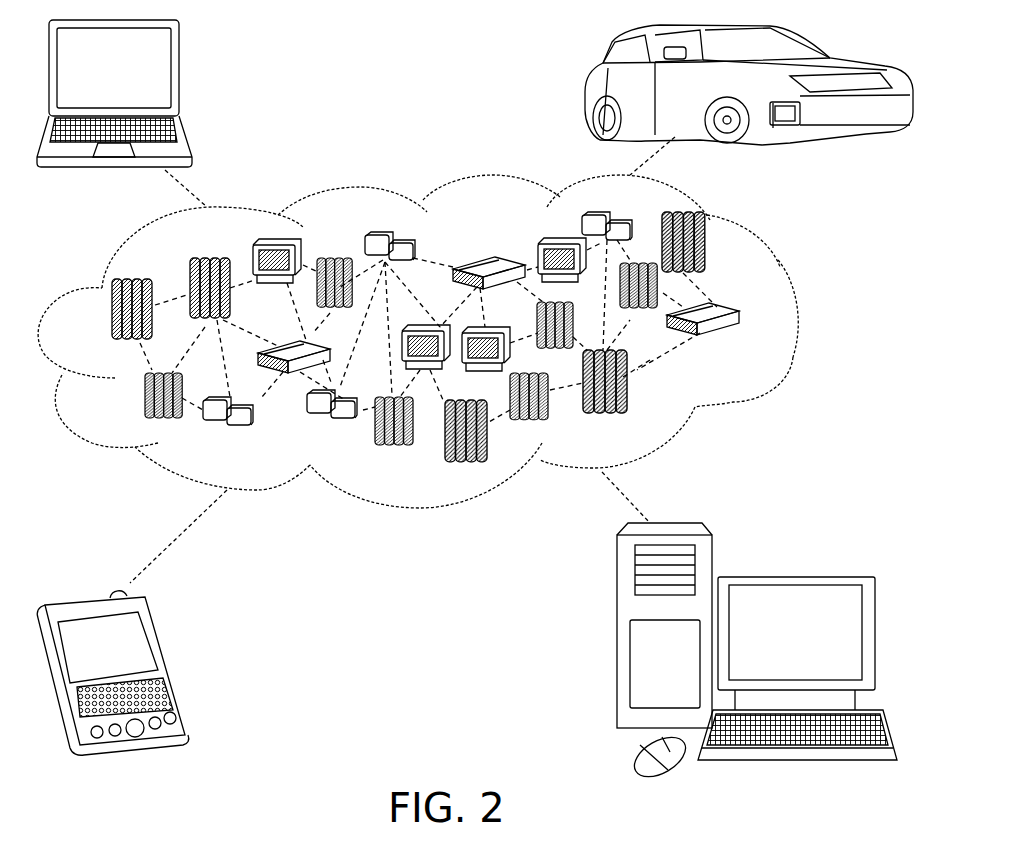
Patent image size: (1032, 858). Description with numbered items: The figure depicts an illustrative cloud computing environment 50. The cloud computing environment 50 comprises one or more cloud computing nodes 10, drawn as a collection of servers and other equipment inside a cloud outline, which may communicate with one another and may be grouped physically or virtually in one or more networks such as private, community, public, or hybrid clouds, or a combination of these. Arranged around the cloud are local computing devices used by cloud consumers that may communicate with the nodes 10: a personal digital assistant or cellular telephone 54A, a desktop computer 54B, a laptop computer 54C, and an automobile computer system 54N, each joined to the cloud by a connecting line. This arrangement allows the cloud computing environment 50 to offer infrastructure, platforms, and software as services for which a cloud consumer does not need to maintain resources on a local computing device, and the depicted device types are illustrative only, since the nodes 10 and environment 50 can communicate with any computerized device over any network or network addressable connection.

The cloud computing node 10 is at (742, 343).
The cloud computing environment 50 is at (795, 318).
The personal digital assistant or cellular telephone 54A is at (168, 660).
The desktop computer 54B is at (793, 577).
The laptop computer 54C is at (178, 75).
The automobile computer system 54N is at (588, 92).